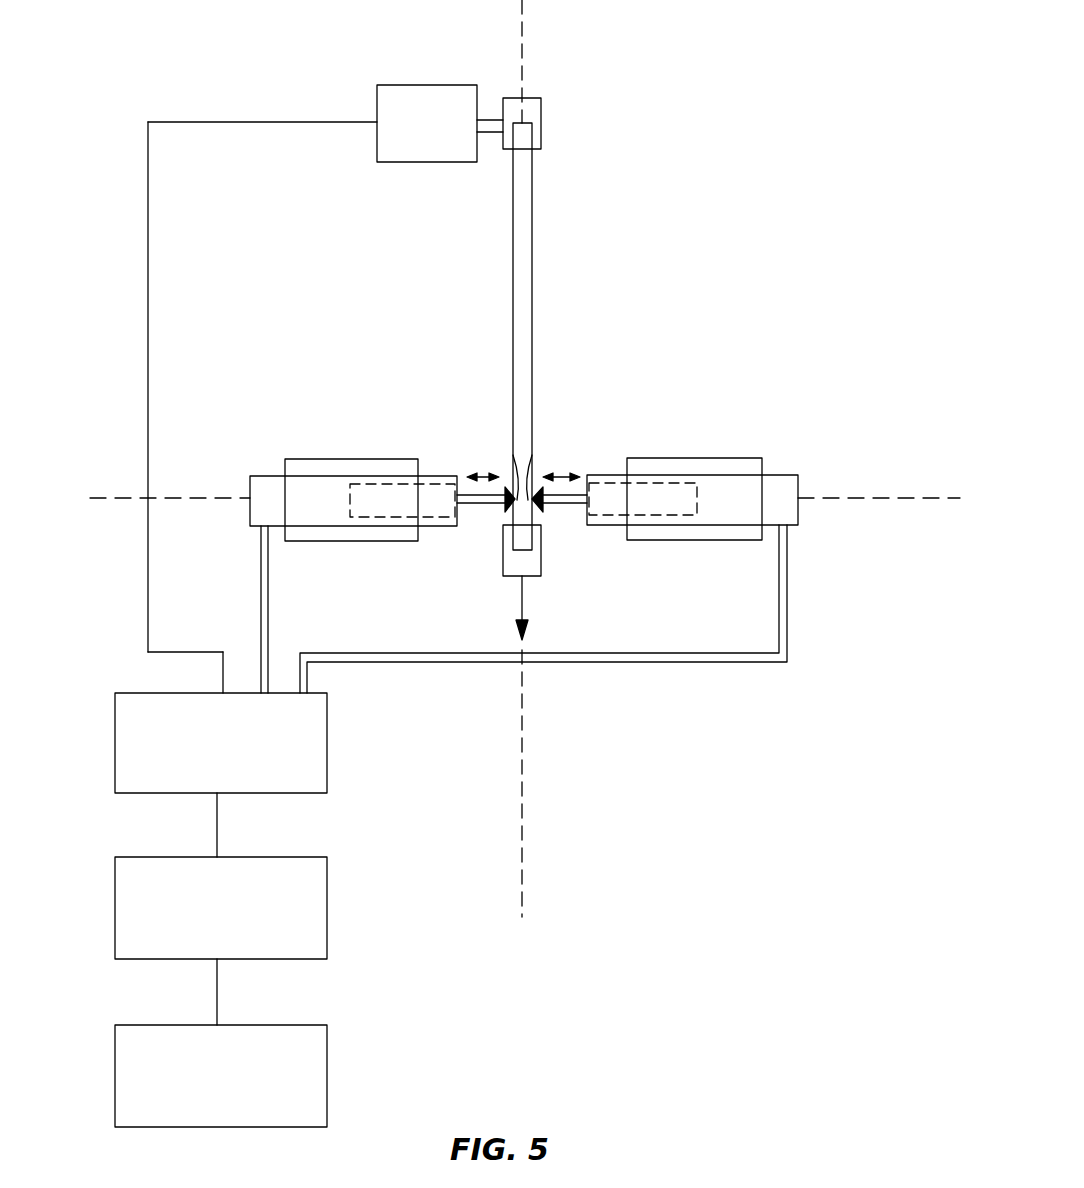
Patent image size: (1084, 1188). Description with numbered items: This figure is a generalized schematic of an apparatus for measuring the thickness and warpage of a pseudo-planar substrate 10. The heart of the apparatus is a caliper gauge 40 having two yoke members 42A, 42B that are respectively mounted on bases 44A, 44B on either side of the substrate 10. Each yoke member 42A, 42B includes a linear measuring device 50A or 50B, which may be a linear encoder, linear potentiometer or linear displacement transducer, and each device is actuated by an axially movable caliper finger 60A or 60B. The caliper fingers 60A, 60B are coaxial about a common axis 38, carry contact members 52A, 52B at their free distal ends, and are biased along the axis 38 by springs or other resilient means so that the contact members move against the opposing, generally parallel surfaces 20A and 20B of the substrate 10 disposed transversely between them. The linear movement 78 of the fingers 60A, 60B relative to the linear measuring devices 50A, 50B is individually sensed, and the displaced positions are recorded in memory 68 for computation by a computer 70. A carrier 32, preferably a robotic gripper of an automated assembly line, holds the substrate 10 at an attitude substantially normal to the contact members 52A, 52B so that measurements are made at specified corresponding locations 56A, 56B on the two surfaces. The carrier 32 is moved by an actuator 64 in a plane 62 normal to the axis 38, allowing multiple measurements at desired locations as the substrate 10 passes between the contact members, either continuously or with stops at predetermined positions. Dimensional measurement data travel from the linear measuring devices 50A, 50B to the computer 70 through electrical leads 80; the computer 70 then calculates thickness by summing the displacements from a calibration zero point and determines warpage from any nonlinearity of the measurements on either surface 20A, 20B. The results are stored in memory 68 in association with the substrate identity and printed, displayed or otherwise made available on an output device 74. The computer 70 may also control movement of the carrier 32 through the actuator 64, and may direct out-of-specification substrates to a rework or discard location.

The pseudo-planar substrate 10 is at (525, 190).
The first surface of substrate 20A is at (512, 223).
The second surface of substrate 20B is at (533, 230).
The carrier 32 is at (532, 113).
The common axis 38 is at (207, 500).
The caliper gauge 40 is at (752, 345).
The first yoke member 42A is at (275, 497).
The second yoke member 42B is at (745, 490).
The first base 44A is at (318, 468).
The second base 44B is at (700, 465).
The first linear measuring device 50A is at (408, 500).
The second linear measuring device 50B is at (630, 497).
The first contact member 52A is at (508, 505).
The second contact member 52B is at (536, 505).
The first measurement location 56A is at (513, 485).
The second measurement location 56B is at (532, 485).
The first caliper finger 60A is at (506, 506).
The second caliper finger 60B is at (539, 505).
The plane of carrier movement 62 is at (523, 23).
The actuator 64 is at (325, 389).
The memory 68 is at (221, 941).
The computer 70 is at (221, 775).
The output device 74 is at (221, 1076).
The linear movement of fingers 78 is at (483, 475).
The electrical leads 80 is at (268, 600).